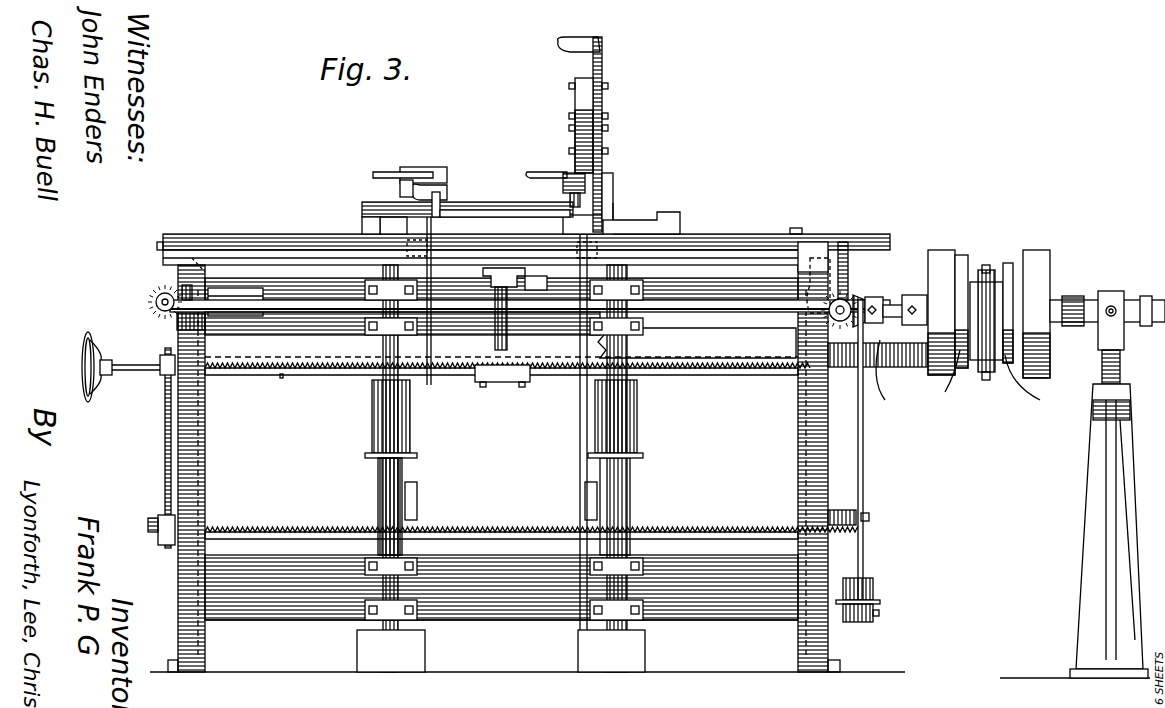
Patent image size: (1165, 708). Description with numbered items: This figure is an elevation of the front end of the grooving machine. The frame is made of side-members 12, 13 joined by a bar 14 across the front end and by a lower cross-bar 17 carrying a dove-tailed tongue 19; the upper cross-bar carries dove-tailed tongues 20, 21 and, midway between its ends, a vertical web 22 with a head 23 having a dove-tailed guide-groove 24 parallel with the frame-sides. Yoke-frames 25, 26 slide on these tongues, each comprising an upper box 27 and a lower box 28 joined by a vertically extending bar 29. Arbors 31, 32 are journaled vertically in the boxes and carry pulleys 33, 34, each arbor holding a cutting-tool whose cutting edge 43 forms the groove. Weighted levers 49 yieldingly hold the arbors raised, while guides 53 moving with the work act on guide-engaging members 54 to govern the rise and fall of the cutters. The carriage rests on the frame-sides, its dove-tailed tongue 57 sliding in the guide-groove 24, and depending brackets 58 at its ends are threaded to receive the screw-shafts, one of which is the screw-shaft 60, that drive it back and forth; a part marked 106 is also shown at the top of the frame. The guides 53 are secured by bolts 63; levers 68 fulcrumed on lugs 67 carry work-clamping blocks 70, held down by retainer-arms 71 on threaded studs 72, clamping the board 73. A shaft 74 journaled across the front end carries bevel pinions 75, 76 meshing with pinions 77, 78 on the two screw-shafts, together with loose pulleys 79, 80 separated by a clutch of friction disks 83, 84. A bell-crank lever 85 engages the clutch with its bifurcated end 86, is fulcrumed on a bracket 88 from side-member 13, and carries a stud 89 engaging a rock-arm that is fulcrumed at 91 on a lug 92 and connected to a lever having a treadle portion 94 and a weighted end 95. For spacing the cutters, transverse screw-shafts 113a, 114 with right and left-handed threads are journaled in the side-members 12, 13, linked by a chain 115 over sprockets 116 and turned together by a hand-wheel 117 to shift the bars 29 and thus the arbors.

The side-member 12 is at (206, 480).
The side-member 13 is at (798, 444).
The bar 14 is at (245, 376).
The lower cross-bar 17 is at (520, 618).
The dove-tailed tongue 19 is at (490, 600).
The dove-tailed tongue 20 is at (300, 292).
The dove-tailed tongue 21 is at (684, 300).
The vertical web 22 is at (500, 384).
The head 23 is at (530, 277).
The dove-tailed guide-groove 24 is at (500, 270).
The yoke-frame 25 is at (382, 466).
The yoke-frame 26 is at (628, 496).
The upper box 27 is at (362, 285).
The lower box 28 is at (365, 590).
The vertically extending bar 29 is at (378, 496).
The arbor 31 is at (380, 480).
The arbor 32 is at (638, 440).
The pulley 33 is at (365, 455).
The pulley 34 is at (640, 456).
The cutting edge 43 is at (365, 222).
The lever 49 is at (418, 496).
The guide 53 is at (398, 234).
The guide-engaging member 54 is at (516, 255).
The dove-tailed tongue 57 is at (492, 268).
The depending bracket 58 is at (178, 268).
The screw-shaft 60 is at (810, 262).
The bolt 63 is at (470, 215).
The lug 67 is at (608, 178).
The lever 68 is at (604, 64).
The work-clamping block 70 is at (574, 102).
The retainer-arm 71 is at (528, 172).
The threaded stud 72 is at (440, 195).
The board 73 is at (475, 210).
The shaft 74 is at (700, 340).
The bevel pinion 75 is at (200, 256).
The bevel pinion 76 is at (870, 350).
The pinion 77 is at (148, 300).
The pinion 78 is at (852, 300).
The loose pulley 79 is at (1036, 252).
The loose pulley 80 is at (940, 252).
The friction disk 83 is at (965, 262).
The friction disk 84 is at (1040, 282).
The bell-crank lever 85 is at (950, 376).
The bifurcated end 86 is at (988, 272).
The bracket 88 is at (966, 380).
The stud 89 is at (920, 312).
The fulcrum 91 is at (870, 517).
The lug 92 is at (860, 508).
The treadle portion 94 is at (882, 602).
The weighted end 95 is at (876, 622).
The top plate 106 is at (762, 240).
The screw-shaft 113a is at (283, 378).
The screw-shaft 114 is at (290, 531).
The chain 115 is at (165, 442).
The sprocket 116 is at (160, 360).
The hand-wheel 117 is at (84, 392).